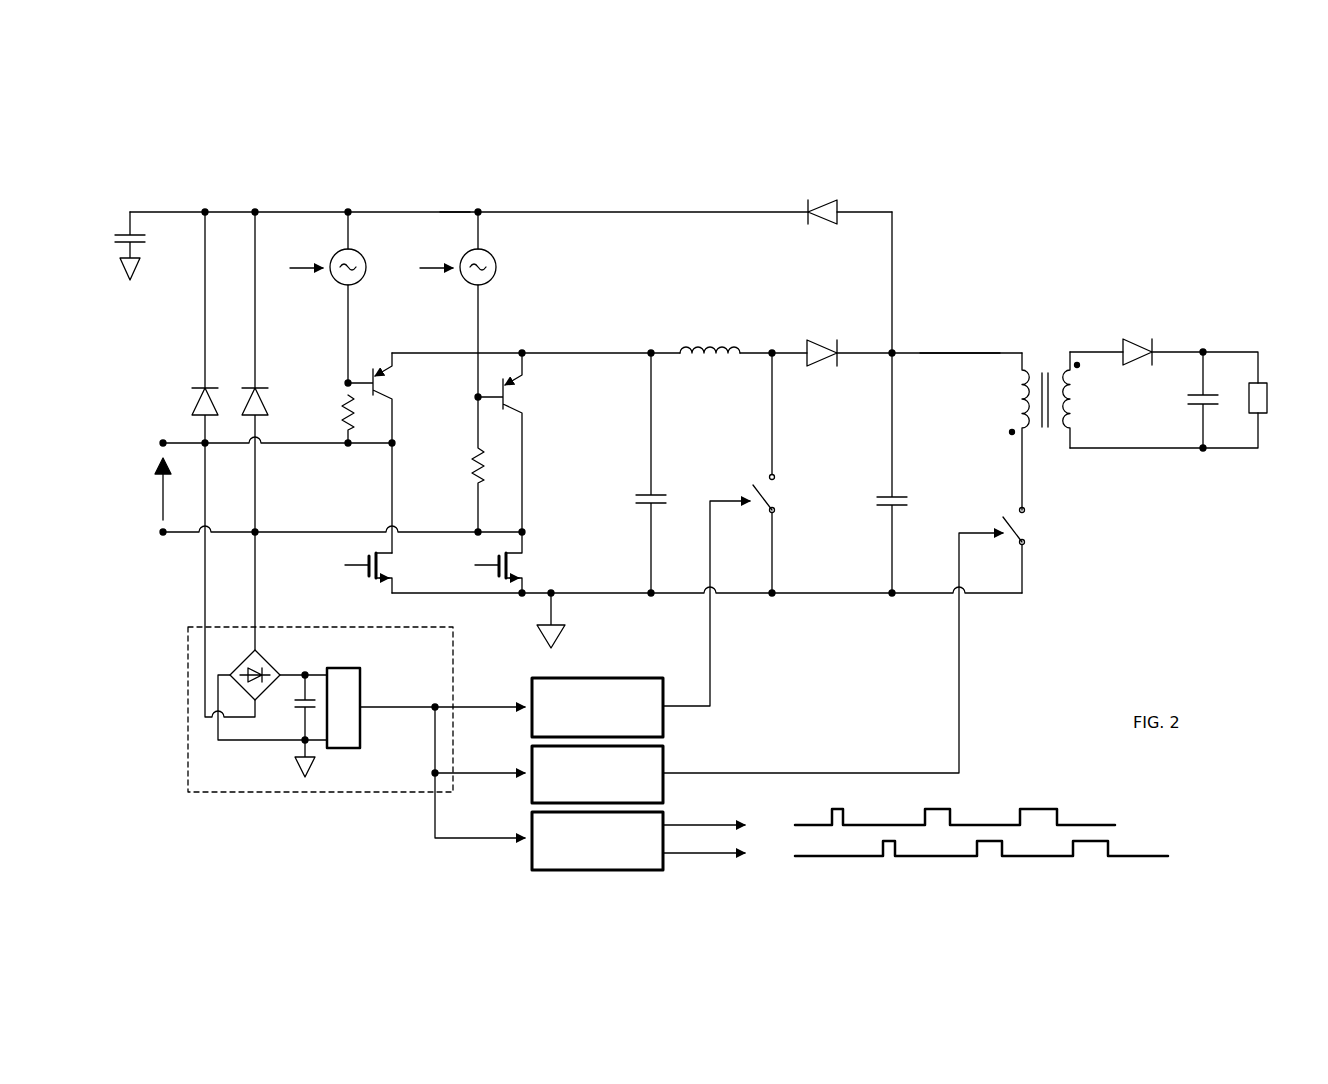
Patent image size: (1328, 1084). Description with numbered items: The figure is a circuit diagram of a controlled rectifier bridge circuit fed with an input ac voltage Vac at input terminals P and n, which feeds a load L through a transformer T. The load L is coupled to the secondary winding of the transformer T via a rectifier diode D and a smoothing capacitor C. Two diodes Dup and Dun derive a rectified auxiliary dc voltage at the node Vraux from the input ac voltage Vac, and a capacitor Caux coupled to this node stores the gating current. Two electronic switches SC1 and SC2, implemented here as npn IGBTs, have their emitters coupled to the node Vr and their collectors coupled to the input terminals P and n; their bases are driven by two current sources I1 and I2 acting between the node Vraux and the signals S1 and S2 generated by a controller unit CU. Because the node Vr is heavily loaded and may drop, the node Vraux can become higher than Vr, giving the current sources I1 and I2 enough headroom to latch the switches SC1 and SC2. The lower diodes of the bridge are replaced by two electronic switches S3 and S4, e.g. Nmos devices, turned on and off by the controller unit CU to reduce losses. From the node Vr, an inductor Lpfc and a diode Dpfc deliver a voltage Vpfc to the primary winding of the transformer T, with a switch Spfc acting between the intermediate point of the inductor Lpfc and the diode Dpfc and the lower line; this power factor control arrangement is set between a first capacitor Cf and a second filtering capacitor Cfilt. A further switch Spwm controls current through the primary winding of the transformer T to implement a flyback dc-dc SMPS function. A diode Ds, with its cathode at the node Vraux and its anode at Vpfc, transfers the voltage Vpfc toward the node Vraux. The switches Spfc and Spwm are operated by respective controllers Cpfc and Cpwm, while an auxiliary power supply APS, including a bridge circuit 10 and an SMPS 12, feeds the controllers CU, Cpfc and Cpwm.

The capacitor Caux is at (118, 240).
The rectified auxiliary dc voltage node Vraux is at (452, 212).
The diode Ds is at (822, 198).
The signal S1 is at (702, 539).
The current source I1 is at (353, 297).
The signal S2 is at (794, 553).
The current source I2 is at (483, 304).
The inductor Lpfc is at (704, 345).
The diode Dpfc is at (822, 340).
The transformer T is at (1056, 350).
The rectifier diode D is at (1135, 340).
The load L is at (1272, 385).
The node Vr is at (440, 353).
The electronic switch SC1 is at (378, 384).
The electronic switch SC2 is at (508, 395).
The voltage Vpfc is at (960, 338).
The diode Dup is at (190, 402).
The diode Dun is at (232, 404).
The input terminal P is at (276, 430).
The input terminal n is at (341, 542).
The input ac voltage Vac is at (160, 494).
The smoothing capacitor C is at (1190, 405).
The first capacitor Cf is at (636, 499).
The switch Spfc is at (766, 500).
The second filtering capacitor Cfilt is at (877, 497).
The switch Spwm is at (1030, 530).
The electronic switch S3 is at (364, 566).
The electronic switch S4 is at (494, 566).
The bridge circuit 10 is at (265, 668).
The SMPS 12 is at (362, 682).
The controller Cpfc is at (614, 678).
The controller Cpwm is at (660, 762).
The auxiliary power supply APS is at (253, 786).
The controller unit CU is at (645, 870).